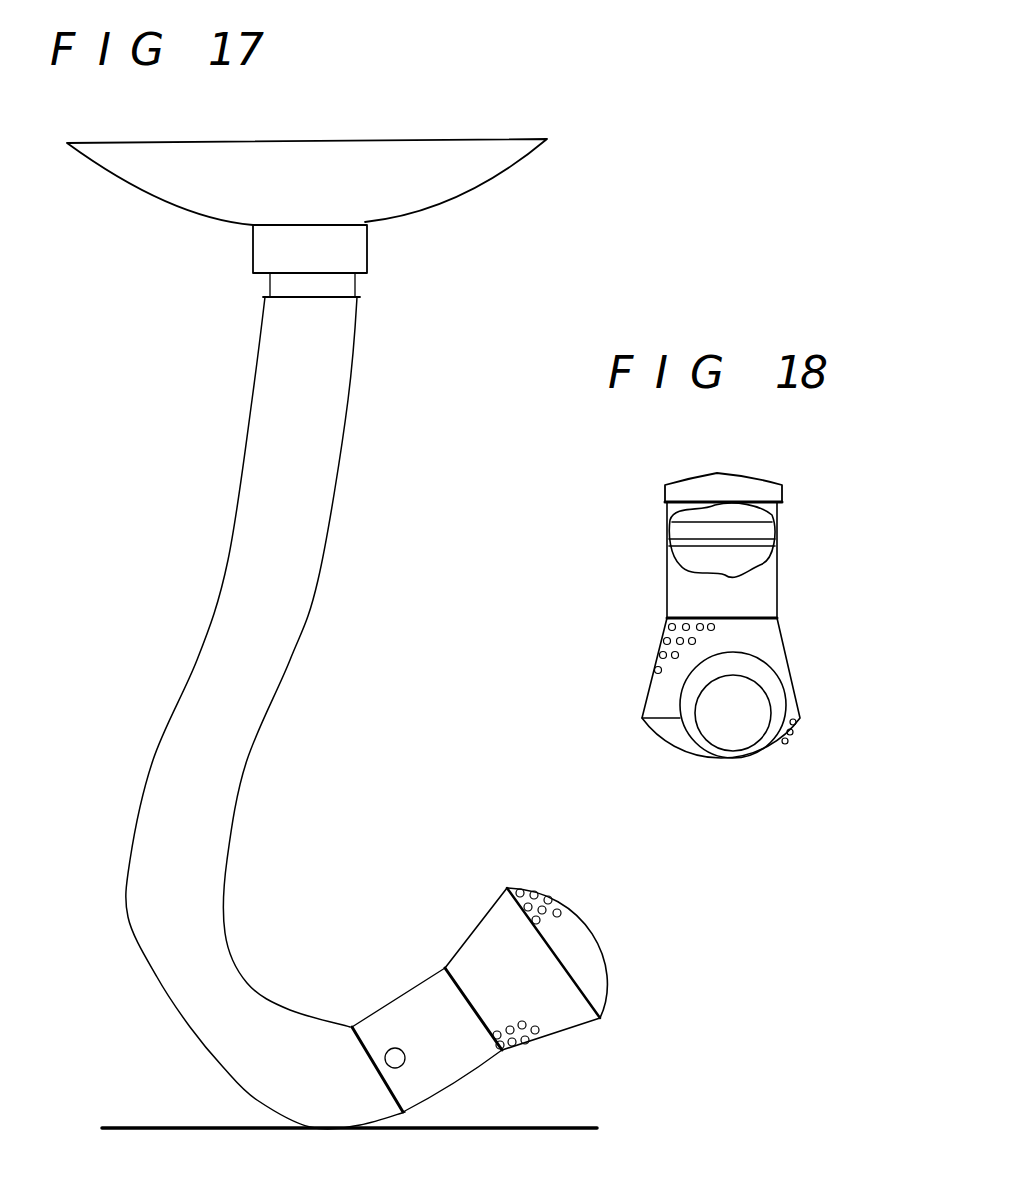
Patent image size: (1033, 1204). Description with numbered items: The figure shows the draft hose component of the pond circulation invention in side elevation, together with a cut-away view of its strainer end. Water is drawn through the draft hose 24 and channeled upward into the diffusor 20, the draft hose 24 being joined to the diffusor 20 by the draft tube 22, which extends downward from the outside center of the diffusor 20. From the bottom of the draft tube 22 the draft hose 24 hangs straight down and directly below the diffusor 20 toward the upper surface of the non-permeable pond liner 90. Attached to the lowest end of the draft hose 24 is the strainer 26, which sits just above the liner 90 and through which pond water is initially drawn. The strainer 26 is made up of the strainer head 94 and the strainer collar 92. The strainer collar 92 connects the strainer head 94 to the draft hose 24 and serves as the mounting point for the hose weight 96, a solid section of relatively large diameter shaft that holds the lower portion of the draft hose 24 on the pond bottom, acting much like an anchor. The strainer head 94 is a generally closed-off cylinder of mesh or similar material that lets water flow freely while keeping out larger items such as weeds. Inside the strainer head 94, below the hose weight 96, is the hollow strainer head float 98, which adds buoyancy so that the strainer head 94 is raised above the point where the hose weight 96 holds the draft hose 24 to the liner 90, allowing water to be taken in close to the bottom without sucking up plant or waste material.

In FIG. 17, the diffusor 20 is at (178, 178).
In FIG. 17, the draft tube 22 is at (257, 238).
In FIG. 17, the draft hose 24 is at (253, 395).
In FIG. 18, the draft hose 24 is at (783, 490).
In FIG. 17, the strainer 26 is at (479, 942).
In FIG. 18, the strainer 26 is at (707, 672).
In FIG. 17, the non-permeable pond liner 90 is at (592, 1123).
In FIG. 17, the strainer collar 92 is at (407, 987).
In FIG. 18, the strainer collar 92 is at (767, 583).
In FIG. 17, the strainer head 94 is at (477, 922).
In FIG. 18, the strainer head 94 is at (795, 665).
In FIG. 17, the hose weight 96 is at (407, 1060).
In FIG. 18, the hose weight 96 is at (717, 532).
In FIG. 18, the strainer head float 98 is at (732, 730).